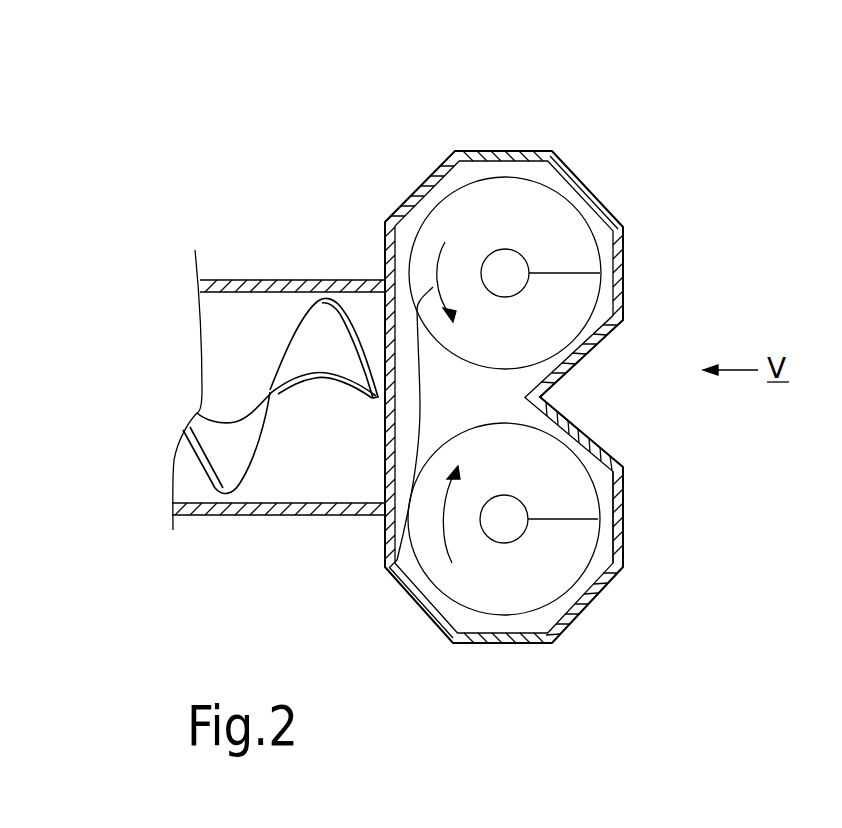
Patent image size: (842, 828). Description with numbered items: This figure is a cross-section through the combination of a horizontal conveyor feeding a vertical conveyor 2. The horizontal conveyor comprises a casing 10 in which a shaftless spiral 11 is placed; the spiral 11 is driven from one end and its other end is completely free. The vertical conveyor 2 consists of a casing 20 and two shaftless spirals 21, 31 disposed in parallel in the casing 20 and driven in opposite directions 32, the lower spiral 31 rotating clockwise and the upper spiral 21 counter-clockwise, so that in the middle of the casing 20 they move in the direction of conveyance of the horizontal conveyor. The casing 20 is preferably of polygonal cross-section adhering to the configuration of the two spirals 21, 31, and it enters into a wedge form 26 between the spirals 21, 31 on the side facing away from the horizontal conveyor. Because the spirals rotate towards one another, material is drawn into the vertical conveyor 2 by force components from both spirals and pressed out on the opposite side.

The vertical conveyor 2 is at (624, 519).
The casing 10 is at (245, 288).
The shaftless spiral 11 is at (349, 314).
The casing 20 is at (587, 181).
The shaftless spiral 21 is at (575, 237).
The wedge form 26 is at (553, 398).
The shaftless spiral 31 is at (552, 583).
The opposite directions 32 is at (437, 527).